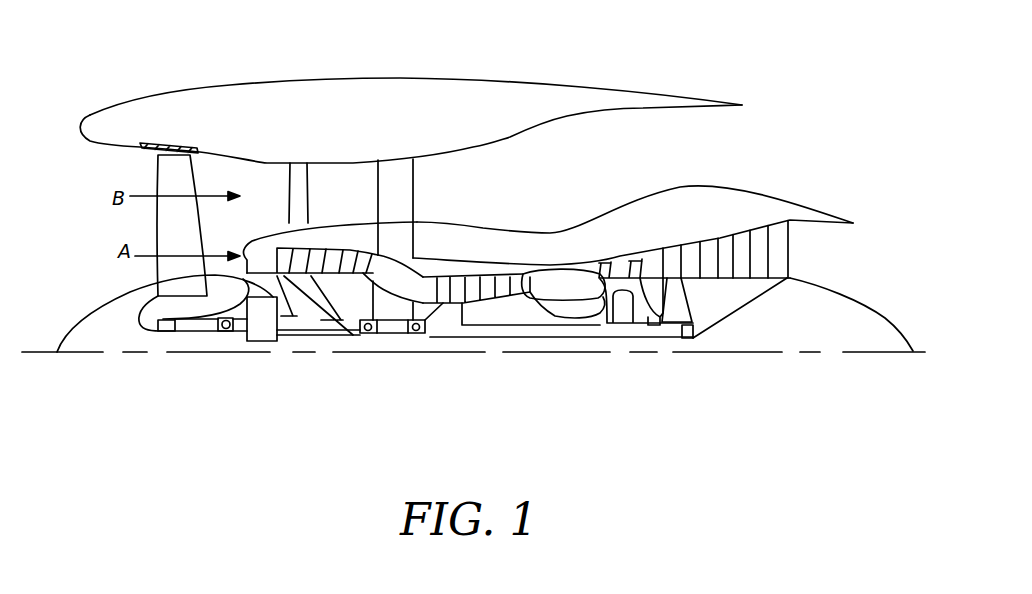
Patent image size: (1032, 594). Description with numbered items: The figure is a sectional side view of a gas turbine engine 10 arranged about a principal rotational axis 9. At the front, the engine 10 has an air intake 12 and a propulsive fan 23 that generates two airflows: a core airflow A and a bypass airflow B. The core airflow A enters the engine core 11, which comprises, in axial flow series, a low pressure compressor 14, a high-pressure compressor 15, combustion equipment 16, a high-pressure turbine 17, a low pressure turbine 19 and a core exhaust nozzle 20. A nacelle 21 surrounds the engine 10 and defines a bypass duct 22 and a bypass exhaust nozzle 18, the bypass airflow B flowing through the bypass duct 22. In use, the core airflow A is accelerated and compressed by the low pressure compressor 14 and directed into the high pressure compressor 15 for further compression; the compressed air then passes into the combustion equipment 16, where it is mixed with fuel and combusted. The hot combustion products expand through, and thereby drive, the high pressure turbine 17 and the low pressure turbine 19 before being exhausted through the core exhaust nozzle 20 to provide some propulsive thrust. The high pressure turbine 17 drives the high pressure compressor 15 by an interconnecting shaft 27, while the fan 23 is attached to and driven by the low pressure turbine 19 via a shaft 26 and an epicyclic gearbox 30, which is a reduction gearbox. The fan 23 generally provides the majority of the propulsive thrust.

The principal rotational axis 9 is at (802, 353).
The gas turbine engine 10 is at (152, 88).
The core 11 is at (528, 250).
The air intake 12 is at (92, 163).
The low pressure compressor 14 is at (333, 252).
The high-pressure compressor 15 is at (480, 287).
The combustion equipment 16 is at (557, 287).
The high-pressure turbine 17 is at (620, 270).
The bypass exhaust nozzle 18 is at (742, 139).
The low pressure turbine 19 is at (760, 235).
The core exhaust nozzle 20 is at (815, 253).
The nacelle 21 is at (392, 92).
The bypass duct 22 is at (686, 161).
The propulsive fan 23 is at (163, 221).
The shaft 26 is at (473, 338).
The interconnecting shaft 27 is at (515, 327).
The epicyclic gearbox 30 is at (260, 330).